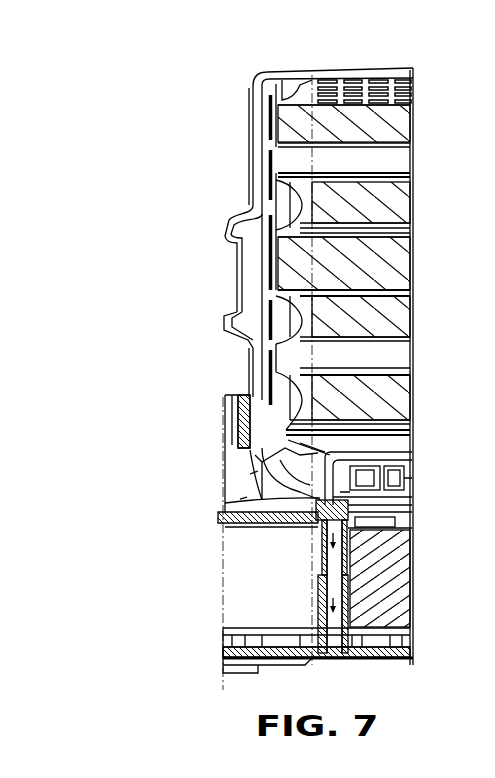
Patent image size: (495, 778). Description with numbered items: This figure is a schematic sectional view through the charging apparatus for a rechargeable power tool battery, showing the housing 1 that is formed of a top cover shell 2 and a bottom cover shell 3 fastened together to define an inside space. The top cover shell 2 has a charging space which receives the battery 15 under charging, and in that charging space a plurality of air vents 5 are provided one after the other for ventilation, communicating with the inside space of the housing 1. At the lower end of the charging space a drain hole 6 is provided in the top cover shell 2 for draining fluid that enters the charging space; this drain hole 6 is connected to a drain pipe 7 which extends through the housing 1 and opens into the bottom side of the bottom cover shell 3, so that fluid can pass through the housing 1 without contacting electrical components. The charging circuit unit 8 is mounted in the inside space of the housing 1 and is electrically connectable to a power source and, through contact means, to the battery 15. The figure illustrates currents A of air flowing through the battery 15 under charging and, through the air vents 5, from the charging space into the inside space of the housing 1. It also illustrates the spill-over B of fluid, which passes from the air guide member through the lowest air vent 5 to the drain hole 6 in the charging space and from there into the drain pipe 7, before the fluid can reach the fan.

The housing 1 is at (214, 457).
The top cover shell 2 is at (243, 396).
The bottom cover shell 3 is at (235, 652).
The air vents 5 is at (262, 491).
The drain hole 6 is at (345, 503).
The drain pipe 7 is at (333, 563).
The charging circuit unit 8 is at (422, 476).
The battery 15 is at (394, 130).
The currents of air A is at (288, 440).
The spill-over of fluid B is at (332, 592).